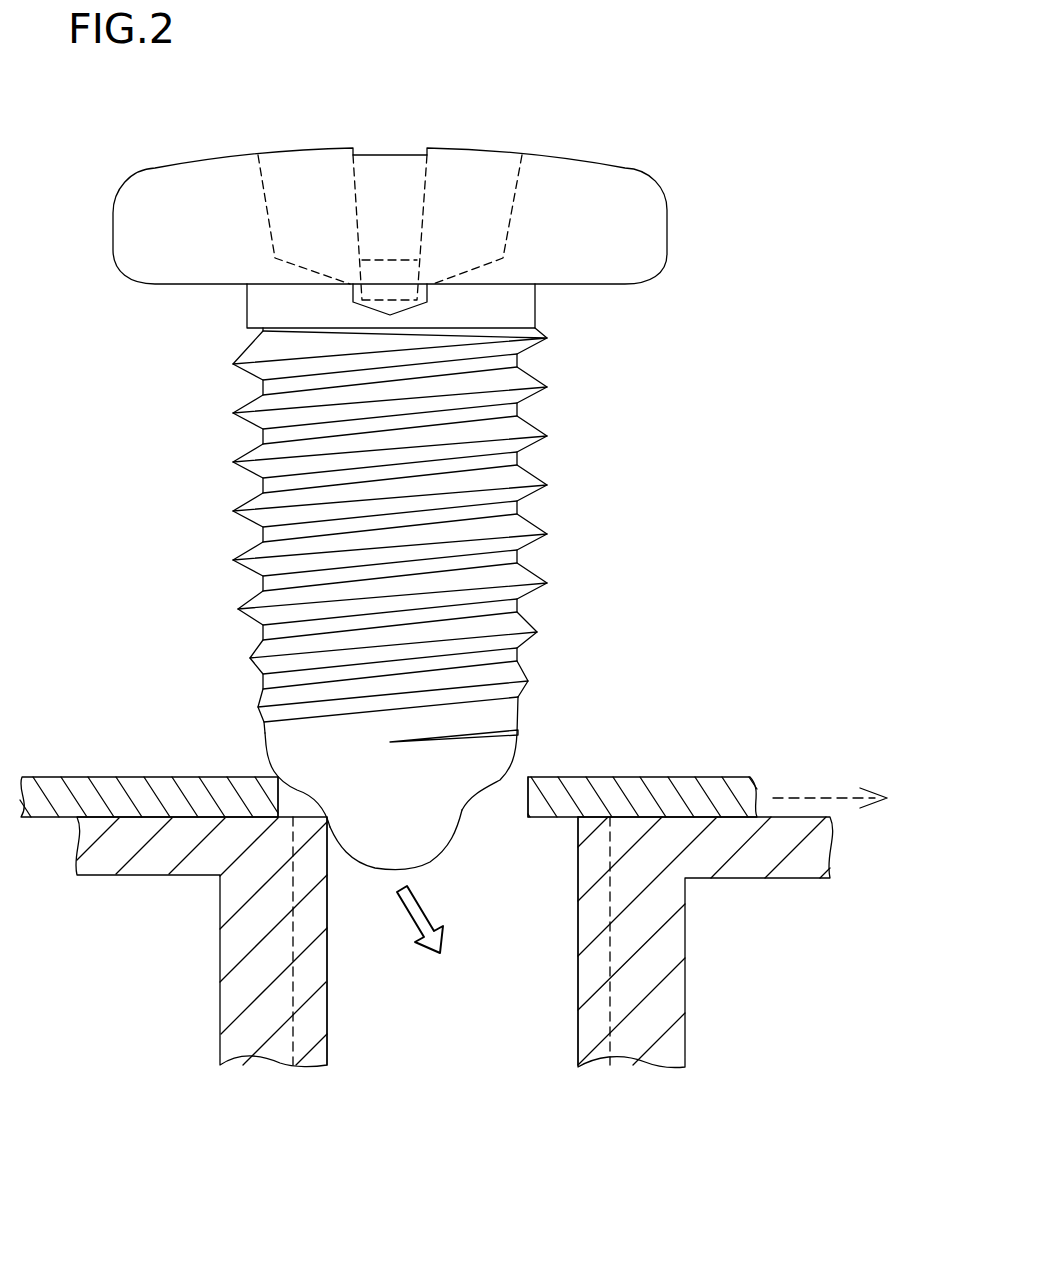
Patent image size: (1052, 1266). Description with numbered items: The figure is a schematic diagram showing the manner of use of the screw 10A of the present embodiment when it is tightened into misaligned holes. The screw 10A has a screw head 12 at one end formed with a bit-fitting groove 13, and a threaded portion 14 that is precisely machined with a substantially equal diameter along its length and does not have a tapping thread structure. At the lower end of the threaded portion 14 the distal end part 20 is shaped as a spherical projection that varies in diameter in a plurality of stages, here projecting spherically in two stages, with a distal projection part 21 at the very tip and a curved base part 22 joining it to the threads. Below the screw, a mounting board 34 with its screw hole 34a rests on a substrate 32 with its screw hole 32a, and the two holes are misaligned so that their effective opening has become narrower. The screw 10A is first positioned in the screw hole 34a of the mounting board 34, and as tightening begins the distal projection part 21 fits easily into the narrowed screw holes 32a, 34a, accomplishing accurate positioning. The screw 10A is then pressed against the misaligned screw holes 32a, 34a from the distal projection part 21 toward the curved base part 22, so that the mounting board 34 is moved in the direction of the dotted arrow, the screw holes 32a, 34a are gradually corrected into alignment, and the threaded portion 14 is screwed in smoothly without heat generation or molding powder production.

The screw 10A is at (567, 133).
The screw head 12 is at (618, 240).
The bit-fitting groove 13 is at (267, 212).
The threaded portion 14 is at (427, 440).
The distal end part 20 is at (303, 743).
The distal projection part 21 is at (377, 843).
The curved base part 22 is at (430, 775).
The mounting board 34 is at (718, 792).
The screw hole 34a is at (528, 798).
The substrate 32 is at (650, 1020).
The screw hole 32a is at (327, 975).